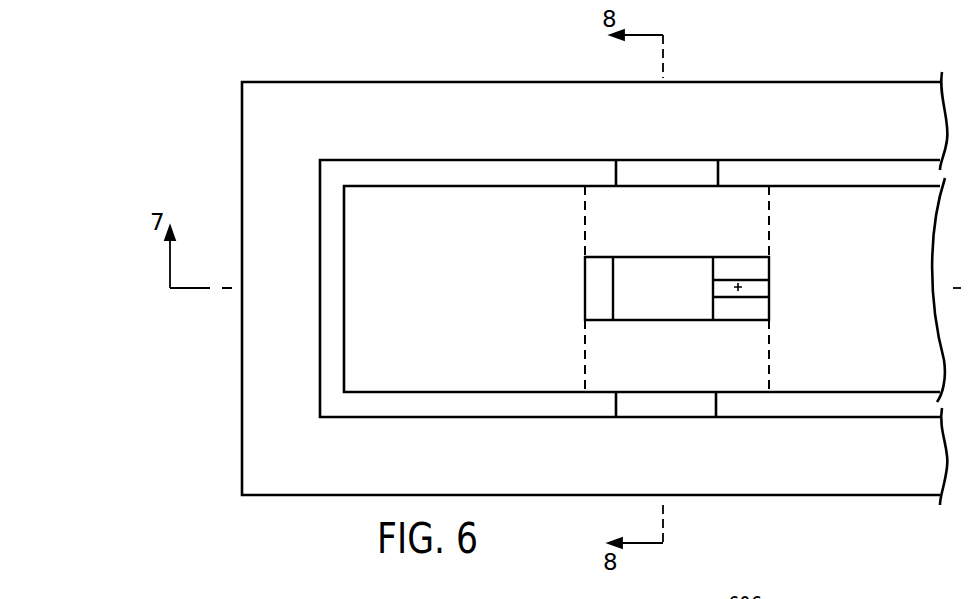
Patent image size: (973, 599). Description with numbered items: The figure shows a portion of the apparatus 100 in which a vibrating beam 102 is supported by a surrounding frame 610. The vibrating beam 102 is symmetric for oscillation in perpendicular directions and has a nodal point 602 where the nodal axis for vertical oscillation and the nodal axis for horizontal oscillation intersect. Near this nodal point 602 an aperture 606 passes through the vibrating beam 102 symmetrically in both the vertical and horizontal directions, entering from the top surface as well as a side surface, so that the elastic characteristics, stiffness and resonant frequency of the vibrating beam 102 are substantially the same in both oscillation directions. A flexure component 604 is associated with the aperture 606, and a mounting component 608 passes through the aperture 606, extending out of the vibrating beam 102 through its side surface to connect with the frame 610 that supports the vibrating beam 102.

The apparatus 100 is at (305, 58).
The vibrating beam 102 is at (362, 340).
The nodal point 602 is at (742, 290).
The flexure component 604 is at (723, 283).
The aperture 606 is at (590, 280).
The mounting component 608 is at (676, 313).
The frame 610 is at (256, 408).